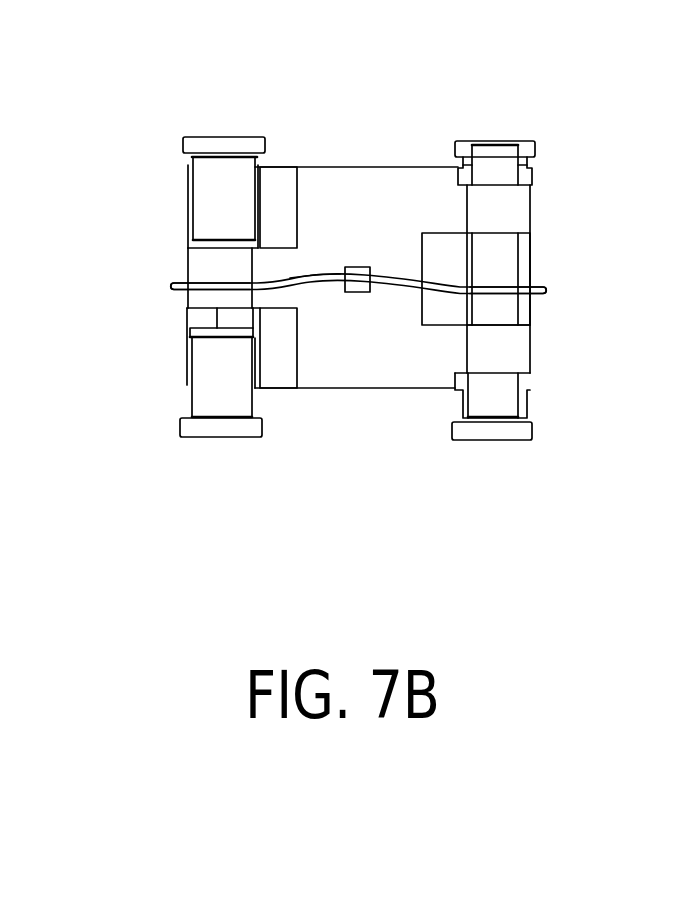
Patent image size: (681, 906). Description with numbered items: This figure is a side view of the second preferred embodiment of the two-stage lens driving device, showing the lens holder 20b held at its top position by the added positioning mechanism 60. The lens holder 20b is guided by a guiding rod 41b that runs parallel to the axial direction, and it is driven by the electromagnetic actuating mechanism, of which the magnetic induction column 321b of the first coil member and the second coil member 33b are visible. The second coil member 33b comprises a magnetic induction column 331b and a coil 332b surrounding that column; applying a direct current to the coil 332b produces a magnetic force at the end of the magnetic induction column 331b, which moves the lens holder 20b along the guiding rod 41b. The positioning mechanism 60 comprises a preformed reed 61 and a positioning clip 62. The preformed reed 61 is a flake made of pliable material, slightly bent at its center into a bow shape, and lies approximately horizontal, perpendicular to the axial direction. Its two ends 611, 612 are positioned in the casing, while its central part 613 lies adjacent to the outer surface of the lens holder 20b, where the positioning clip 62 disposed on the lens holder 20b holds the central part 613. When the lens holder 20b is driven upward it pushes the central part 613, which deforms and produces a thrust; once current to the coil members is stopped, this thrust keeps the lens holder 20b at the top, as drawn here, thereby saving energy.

The lens holder 20b is at (360, 167).
The magnetic induction column 321b is at (497, 141).
The guiding rod 41b is at (507, 160).
The end of preformed reed 611 is at (540, 290).
The end of preformed reed 612 is at (176, 293).
The central part of preformed reed 613 is at (312, 283).
The second coil member 33b is at (77, 378).
The coil 332b is at (210, 398).
The magnetic induction column 331b is at (205, 431).
The positioning mechanism 60 is at (364, 384).
The preformed reed 61 is at (407, 283).
The positioning clip 62 is at (358, 288).